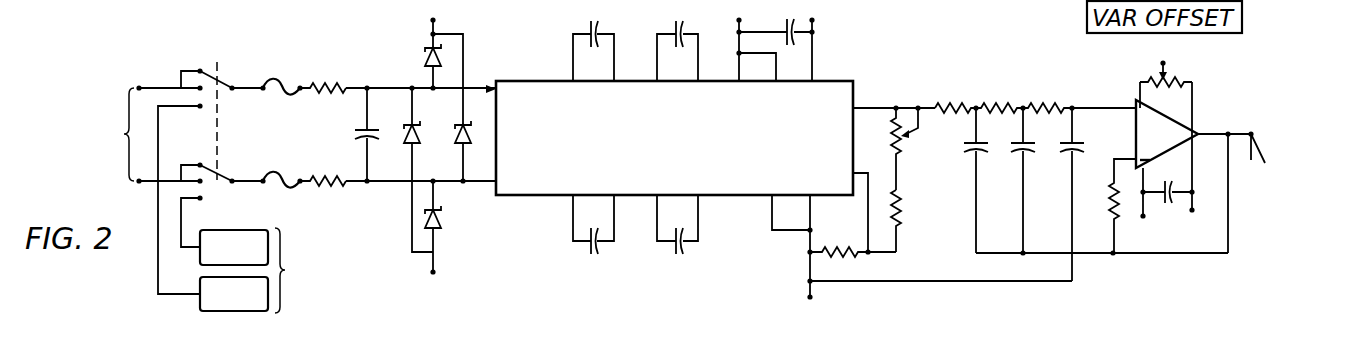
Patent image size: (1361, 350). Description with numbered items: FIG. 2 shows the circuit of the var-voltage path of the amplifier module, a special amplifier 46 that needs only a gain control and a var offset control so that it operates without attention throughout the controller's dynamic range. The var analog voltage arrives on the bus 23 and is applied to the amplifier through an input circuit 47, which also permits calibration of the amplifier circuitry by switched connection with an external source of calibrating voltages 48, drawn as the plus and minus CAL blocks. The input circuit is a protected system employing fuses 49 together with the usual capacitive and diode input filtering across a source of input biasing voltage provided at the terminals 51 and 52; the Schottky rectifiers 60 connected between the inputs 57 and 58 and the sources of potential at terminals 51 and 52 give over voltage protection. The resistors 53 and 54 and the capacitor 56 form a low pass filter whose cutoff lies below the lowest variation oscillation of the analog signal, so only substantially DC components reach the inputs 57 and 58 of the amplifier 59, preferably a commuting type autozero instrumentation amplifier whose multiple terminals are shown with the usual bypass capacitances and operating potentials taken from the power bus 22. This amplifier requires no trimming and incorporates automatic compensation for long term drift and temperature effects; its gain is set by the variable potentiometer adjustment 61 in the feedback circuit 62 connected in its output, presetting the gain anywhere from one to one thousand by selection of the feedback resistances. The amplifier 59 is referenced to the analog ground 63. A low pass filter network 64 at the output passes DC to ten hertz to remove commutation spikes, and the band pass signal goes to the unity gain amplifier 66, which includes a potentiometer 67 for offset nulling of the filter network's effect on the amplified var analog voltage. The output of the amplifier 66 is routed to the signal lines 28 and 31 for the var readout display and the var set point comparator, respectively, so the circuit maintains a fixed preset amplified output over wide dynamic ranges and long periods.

The power bus 22 is at (548, 349).
The bus 23 is at (148, 134).
The signal line 28 is at (1265, 161).
The signal line 31 is at (1251, 160).
The special amplifier 46 is at (559, 231).
The input circuit 47 is at (186, 64).
The external source of calibrating voltages 48 is at (238, 209).
The fuses 49 is at (285, 84).
The terminal 51 is at (426, 24).
The terminal 52 is at (437, 259).
The resistor 53 is at (338, 85).
The resistor 54 is at (324, 192).
The capacitor 56 is at (355, 133).
The input 57 is at (497, 80).
The input 58 is at (494, 196).
The amplifier 59 is at (813, 94).
The Schottky rectifiers 60 is at (424, 57).
The variable potentiometer adjustment 61 is at (919, 130).
The feedback circuit 62 is at (898, 173).
The analog ground 63 is at (808, 281).
The low pass filter network 64 is at (1016, 100).
The unity gain amplifier 66 is at (1199, 133).
The potentiometer 67 is at (1186, 80).